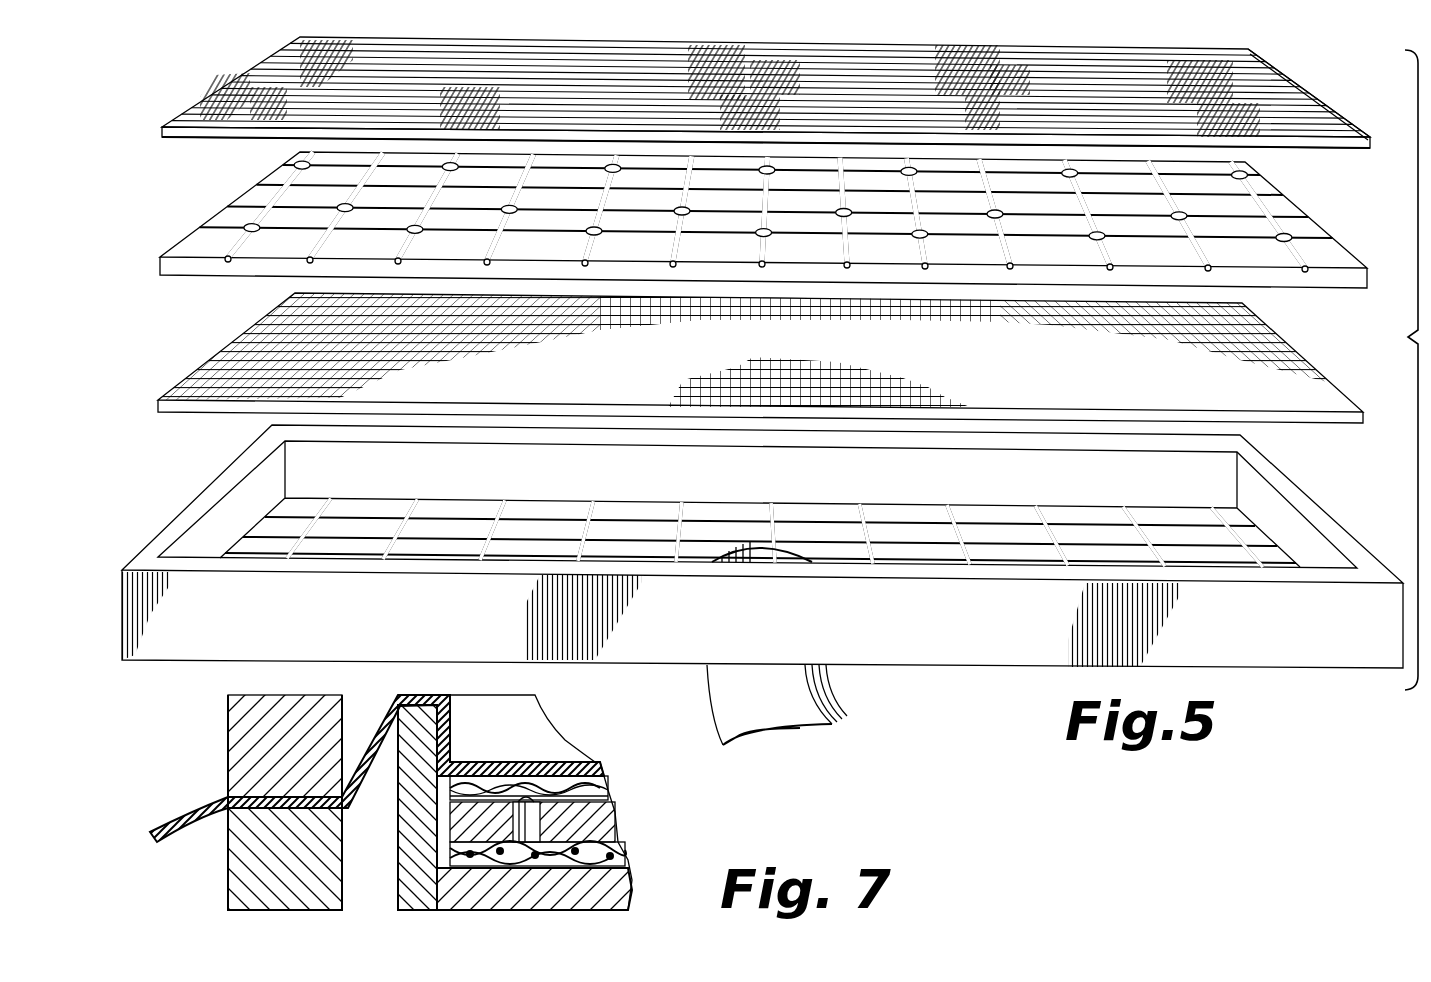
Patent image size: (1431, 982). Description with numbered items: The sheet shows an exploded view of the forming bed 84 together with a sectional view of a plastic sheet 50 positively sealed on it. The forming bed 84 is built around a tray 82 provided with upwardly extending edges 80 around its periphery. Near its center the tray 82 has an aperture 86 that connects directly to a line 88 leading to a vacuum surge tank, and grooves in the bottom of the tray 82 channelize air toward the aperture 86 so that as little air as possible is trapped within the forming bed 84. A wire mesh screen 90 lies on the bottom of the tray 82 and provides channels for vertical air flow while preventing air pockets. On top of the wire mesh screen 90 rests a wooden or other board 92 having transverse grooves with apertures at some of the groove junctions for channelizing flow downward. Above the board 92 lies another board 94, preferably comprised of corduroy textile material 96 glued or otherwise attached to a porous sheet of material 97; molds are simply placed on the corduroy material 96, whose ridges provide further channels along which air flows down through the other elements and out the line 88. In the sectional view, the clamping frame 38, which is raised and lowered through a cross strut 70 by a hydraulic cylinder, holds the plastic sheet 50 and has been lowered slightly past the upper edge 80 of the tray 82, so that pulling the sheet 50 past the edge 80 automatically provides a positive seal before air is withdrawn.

In FIG. 7, the clamping frame 38 is at (258, 753).
In FIG. 7, the plastic sheet 50 is at (592, 762).
In FIG. 5, the cross strut 70 is at (240, 345).
In FIG. 7, the upwardly extending edge 80 is at (413, 778).
In FIG. 5, the tray 82 is at (216, 470).
In FIG. 7, the tray 82 is at (620, 886).
In FIG. 5, the forming bed 84 is at (1408, 337).
In FIG. 5, the aperture 86 is at (775, 560).
In FIG. 5, the line 88 is at (815, 693).
In FIG. 7, the wire mesh screen 90 is at (633, 853).
In FIG. 5, the board 92 is at (190, 240).
In FIG. 7, the board 92 is at (600, 824).
In FIG. 5, the board 94 is at (160, 130).
In FIG. 7, the board 94 is at (610, 787).
In FIG. 5, the corduroy textile material 96 is at (268, 80).
In FIG. 5, the porous sheet of material 97 is at (203, 133).